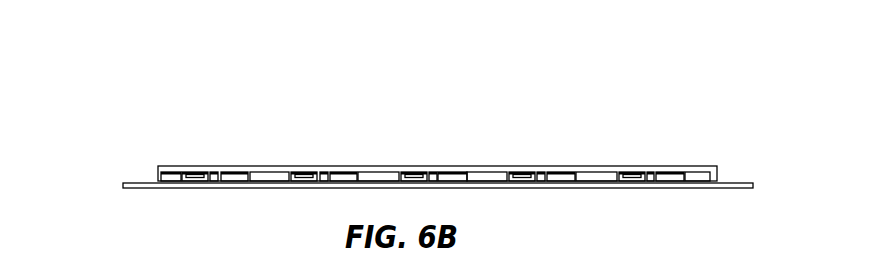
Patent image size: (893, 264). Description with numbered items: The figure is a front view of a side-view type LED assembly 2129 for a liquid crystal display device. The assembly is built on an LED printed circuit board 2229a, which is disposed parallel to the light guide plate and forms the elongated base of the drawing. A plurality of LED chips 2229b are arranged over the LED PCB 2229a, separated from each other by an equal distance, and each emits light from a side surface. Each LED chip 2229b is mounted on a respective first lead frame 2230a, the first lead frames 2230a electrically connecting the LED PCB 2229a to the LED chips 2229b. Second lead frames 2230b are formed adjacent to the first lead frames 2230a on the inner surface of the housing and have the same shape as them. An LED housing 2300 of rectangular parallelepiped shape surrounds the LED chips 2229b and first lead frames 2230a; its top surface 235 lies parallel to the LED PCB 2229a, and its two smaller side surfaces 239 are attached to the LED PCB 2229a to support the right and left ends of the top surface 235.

The LED assembly 2129 is at (443, 70).
The LED housing 2300 is at (148, 161).
The smaller side surfaces 239 is at (157, 176).
The LED printed circuit board 2229a is at (123, 184).
The LED chips 2229b is at (298, 171).
The first lead frames 2230a is at (320, 171).
The second lead frames 2230b is at (345, 171).
The top surface 235 is at (387, 167).